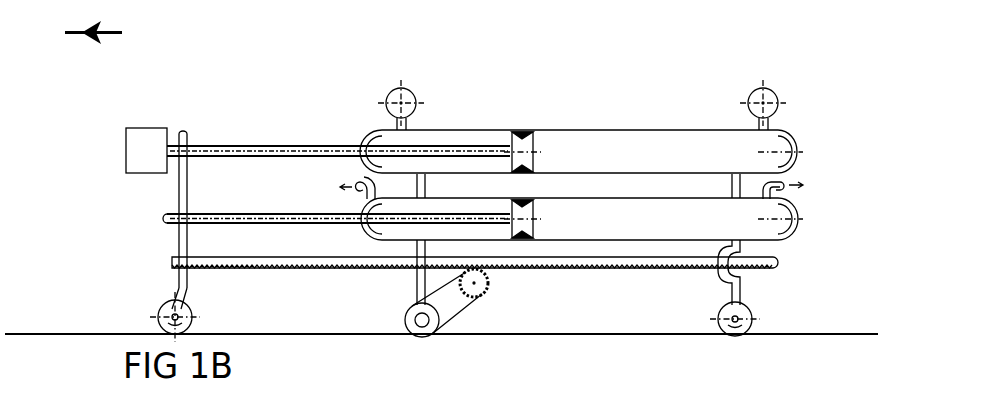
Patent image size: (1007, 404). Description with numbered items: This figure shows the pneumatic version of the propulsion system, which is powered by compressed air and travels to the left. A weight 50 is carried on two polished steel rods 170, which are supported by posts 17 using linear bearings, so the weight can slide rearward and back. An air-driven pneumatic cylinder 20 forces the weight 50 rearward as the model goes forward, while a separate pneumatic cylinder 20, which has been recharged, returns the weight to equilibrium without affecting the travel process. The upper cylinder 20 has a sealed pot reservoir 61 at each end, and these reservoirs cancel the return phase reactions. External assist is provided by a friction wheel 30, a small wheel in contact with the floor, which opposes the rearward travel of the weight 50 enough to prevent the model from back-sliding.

The weight 50 is at (138, 176).
The polished steel rods 170 is at (290, 157).
The pneumatic cylinder 20 is at (617, 128).
The sealed pot reservoir 61 is at (415, 92).
The posts 17 is at (430, 193).
The friction wheel 30 is at (405, 321).